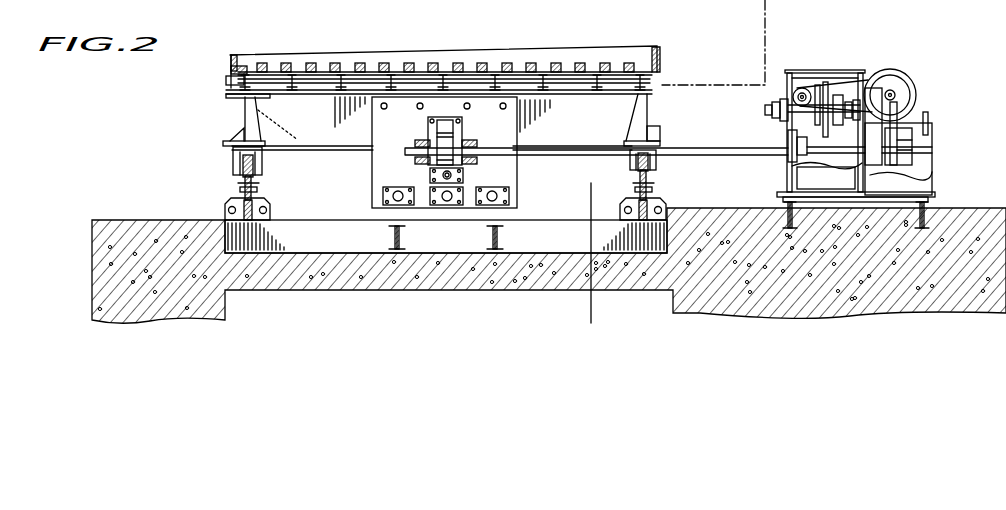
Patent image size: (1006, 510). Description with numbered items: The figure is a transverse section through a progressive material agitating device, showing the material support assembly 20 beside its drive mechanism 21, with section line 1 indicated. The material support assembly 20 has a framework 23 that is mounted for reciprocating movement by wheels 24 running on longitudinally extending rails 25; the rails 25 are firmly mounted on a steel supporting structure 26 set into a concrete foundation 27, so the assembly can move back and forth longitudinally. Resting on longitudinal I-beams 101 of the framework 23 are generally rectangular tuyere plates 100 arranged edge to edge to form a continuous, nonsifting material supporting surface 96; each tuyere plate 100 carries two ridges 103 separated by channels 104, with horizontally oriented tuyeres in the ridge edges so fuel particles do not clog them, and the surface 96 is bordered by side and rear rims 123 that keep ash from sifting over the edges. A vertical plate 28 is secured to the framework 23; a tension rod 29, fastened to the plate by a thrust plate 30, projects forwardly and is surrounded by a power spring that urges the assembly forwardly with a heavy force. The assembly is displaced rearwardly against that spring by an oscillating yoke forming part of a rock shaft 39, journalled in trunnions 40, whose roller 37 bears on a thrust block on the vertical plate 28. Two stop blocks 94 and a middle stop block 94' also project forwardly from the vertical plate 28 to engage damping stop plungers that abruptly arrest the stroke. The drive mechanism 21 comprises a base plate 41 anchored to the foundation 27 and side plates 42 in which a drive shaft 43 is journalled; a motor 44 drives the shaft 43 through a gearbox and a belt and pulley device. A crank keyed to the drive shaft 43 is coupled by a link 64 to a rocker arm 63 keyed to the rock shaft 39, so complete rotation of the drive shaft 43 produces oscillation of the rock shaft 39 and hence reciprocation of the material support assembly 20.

The section line 1- 1 is at (740, 13).
The material support assembly 20 is at (678, 70).
The drive mechanism 21 is at (908, 63).
The framework 23 is at (245, 116).
The wheels 24 is at (243, 176).
The rails 25 is at (258, 187).
The steel supporting structure 26 is at (500, 241).
The concrete foundation 27 is at (362, 282).
The vertical plate 28 is at (513, 112).
The tension rod 29 is at (463, 176).
The thrust plate 30 is at (430, 176).
The roller 37 is at (440, 126).
The rock shaft 39 is at (686, 148).
The trunnions 40 is at (470, 146).
The base plate 41 is at (930, 192).
The side plates 42 is at (788, 178).
The drive shaft 43 is at (780, 112).
The motor 44 is at (914, 82).
The rocker arm 63 is at (932, 170).
The link 64 is at (918, 100).
The stop blocks 94 is at (452, 189).
The middle stop block 94' is at (445, 217).
The material supporting surface 96 is at (229, 64).
The tuyere plates 100 is at (312, 63).
The longitudinal I-beams 101 is at (330, 91).
The ridges 103 is at (408, 63).
The channels 104 is at (446, 63).
The side and rear rims 123 is at (236, 56).